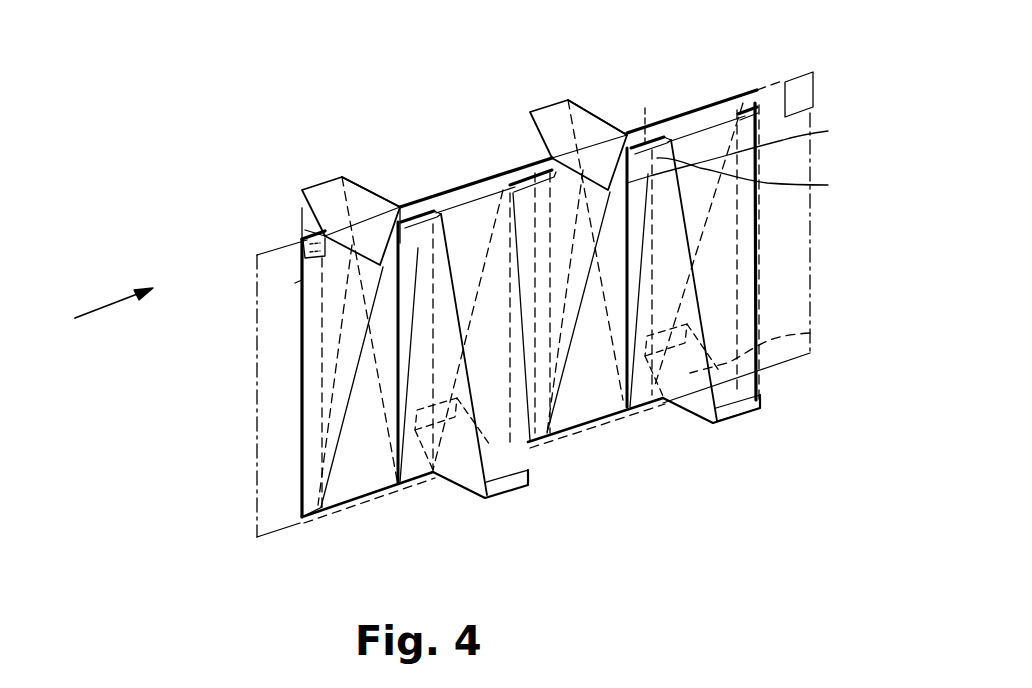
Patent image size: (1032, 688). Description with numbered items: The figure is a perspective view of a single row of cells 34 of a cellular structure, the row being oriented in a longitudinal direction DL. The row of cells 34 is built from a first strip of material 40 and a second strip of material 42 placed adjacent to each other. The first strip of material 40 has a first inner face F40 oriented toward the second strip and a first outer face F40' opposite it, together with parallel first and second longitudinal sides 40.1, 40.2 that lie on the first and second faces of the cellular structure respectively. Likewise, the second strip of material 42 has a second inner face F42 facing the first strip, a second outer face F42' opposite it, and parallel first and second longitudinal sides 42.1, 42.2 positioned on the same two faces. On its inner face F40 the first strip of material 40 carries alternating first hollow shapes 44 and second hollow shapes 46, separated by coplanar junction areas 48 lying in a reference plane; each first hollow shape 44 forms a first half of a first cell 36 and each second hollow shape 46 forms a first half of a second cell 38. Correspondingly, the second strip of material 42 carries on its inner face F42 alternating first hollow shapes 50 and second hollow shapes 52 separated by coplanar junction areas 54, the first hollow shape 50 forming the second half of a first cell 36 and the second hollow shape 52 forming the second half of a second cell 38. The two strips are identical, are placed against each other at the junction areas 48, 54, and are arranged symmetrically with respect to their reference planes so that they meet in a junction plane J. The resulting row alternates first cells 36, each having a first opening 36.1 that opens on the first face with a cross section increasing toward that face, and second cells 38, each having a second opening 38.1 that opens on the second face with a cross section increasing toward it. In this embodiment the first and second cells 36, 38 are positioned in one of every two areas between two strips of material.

The row of cells 34 is at (232, 350).
The first cell 36 is at (331, 190).
The first opening 36.1 is at (370, 185).
The second cell 38 is at (470, 470).
The second opening 38.1 is at (506, 500).
The first strip of material 40 is at (294, 172).
The first longitudinal side 40.1 is at (505, 172).
The second longitudinal side 40.2 is at (306, 514).
The second strip of material 42 is at (388, 270).
The first longitudinal side 42.1 is at (467, 192).
The second longitudinal side 42.2 is at (312, 520).
The first hollow shape 44 is at (552, 130).
The second hollow shape 46 is at (800, 333).
The junction area 48 is at (649, 113).
The first hollow shape 50 is at (761, 179).
The second hollow shape 52 is at (737, 418).
The junction area 54 is at (743, 151).
The first inner face F40 is at (268, 229).
The first outer face F40' is at (248, 215).
The second inner face F42 is at (403, 195).
The second outer face F42' is at (237, 298).
The longitudinal direction DL is at (113, 300).
The junction plane J is at (799, 94).